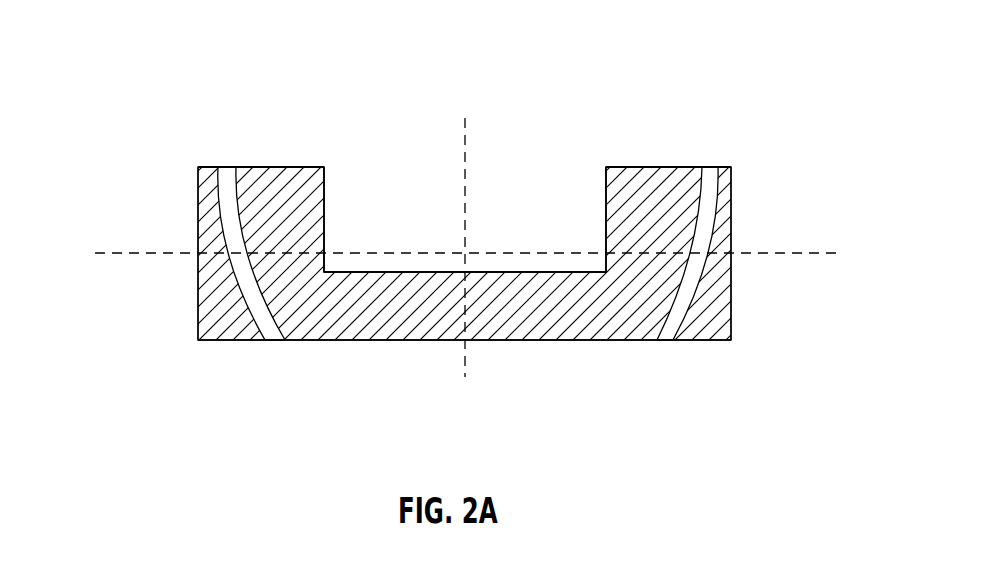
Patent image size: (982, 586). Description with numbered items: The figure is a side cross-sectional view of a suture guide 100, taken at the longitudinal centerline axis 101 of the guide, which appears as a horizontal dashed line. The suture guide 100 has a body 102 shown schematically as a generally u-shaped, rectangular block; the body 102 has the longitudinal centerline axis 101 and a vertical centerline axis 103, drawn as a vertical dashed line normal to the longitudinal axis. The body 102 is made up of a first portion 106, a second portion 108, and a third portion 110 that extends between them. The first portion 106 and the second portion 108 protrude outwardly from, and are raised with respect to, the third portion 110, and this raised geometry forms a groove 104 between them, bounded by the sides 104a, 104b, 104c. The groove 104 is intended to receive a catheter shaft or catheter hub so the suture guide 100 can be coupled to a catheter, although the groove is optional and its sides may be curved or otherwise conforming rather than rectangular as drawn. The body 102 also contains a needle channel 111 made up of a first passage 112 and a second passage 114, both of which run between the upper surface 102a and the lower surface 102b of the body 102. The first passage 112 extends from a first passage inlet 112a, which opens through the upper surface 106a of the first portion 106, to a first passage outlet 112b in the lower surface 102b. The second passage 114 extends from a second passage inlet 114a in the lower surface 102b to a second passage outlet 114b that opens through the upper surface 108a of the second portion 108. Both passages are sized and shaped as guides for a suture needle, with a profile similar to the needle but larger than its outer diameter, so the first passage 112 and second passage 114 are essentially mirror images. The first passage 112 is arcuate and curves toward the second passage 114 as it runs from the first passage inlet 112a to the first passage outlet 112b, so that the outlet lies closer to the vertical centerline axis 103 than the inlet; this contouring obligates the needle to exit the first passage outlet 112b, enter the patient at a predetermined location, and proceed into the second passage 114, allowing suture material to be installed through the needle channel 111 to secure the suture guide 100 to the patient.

The suture guide 100 is at (154, 51).
The longitudinal centerline axis 101 is at (96, 252).
The body 102 is at (409, 333).
The upper surface 102a is at (292, 166).
The lower surface 102b is at (492, 341).
The vertical centerline axis 103 is at (462, 140).
The groove 104 is at (497, 177).
The side of the groove 104a is at (325, 185).
The side of the groove 104b is at (450, 272).
The side of the groove 104c is at (605, 247).
The first portion 106 is at (197, 243).
The upper surface of the first portion 106a is at (223, 166).
The second portion 108 is at (732, 223).
The upper surface of the second portion 108a is at (720, 166).
The third portion 110 is at (535, 304).
The needle channel 111 is at (220, 200).
The first passage 112 is at (229, 276).
The first passage inlet 112a is at (232, 166).
The first passage outlet 112b is at (277, 341).
The second passage 114 is at (716, 244).
The second passage inlet 114a is at (655, 341).
The second passage outlet 114b is at (710, 166).